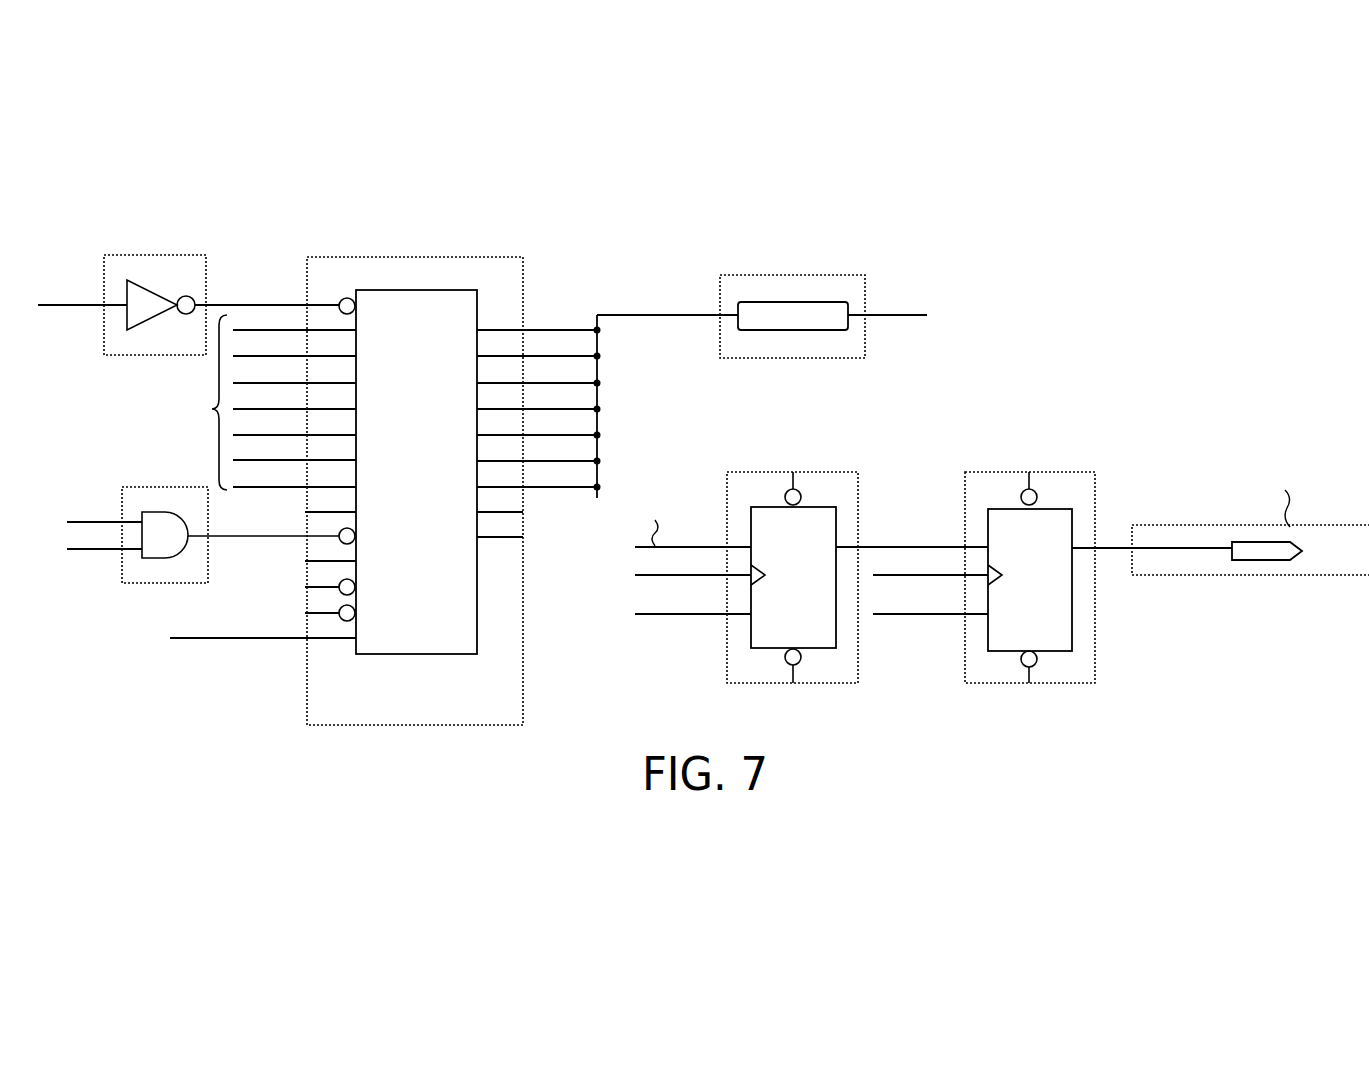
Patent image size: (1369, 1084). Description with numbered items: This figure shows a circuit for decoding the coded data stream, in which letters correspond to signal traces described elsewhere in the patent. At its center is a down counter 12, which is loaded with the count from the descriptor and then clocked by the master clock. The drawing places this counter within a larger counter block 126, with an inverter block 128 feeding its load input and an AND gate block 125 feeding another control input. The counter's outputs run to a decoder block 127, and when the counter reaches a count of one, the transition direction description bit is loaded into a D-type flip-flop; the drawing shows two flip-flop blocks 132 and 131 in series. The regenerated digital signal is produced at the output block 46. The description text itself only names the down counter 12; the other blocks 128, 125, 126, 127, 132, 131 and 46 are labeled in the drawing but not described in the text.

The down counter 12 is at (416, 440).
The NOT gate (inverter) 128 is at (188, 305).
The AND2 gate 125 is at (203, 535).
The UP/DN counter block 126 is at (454, 476).
The rdec decoder 127 is at (836, 318).
The DFFE flip-flop 132 is at (811, 577).
The DFFE flip-flop 131 is at (1052, 577).
The output (FSK1) 46 is at (1250, 521).